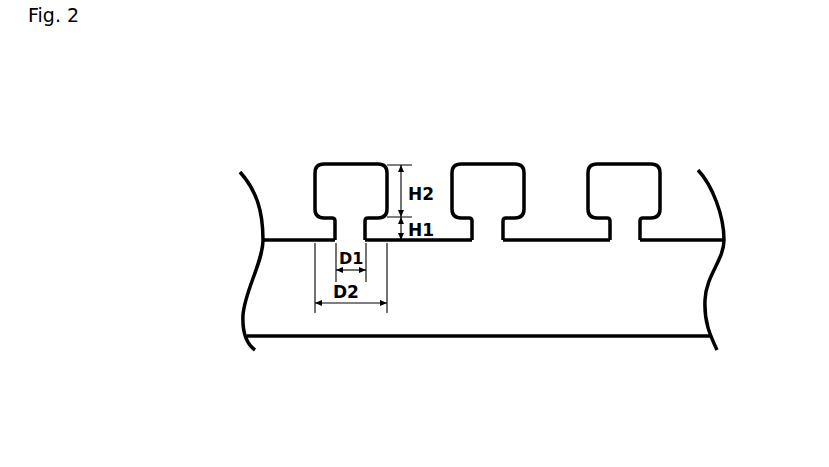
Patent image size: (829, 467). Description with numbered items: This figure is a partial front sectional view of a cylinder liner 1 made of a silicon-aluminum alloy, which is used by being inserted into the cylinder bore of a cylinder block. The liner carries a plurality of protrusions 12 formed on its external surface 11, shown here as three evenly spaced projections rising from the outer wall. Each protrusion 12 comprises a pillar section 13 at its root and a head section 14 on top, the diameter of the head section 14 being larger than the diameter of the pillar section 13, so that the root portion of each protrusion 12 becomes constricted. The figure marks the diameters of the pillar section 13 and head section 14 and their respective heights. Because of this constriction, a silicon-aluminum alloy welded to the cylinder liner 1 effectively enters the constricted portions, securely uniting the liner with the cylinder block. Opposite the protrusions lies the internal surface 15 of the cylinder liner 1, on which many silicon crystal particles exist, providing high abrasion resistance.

The cylinder liner 1 is at (623, 104).
The external surface 11 is at (297, 240).
The protrusions 12 is at (600, 164).
The pillar section 13 is at (531, 218).
The head section 14 is at (531, 167).
The internal surface 15 is at (407, 337).